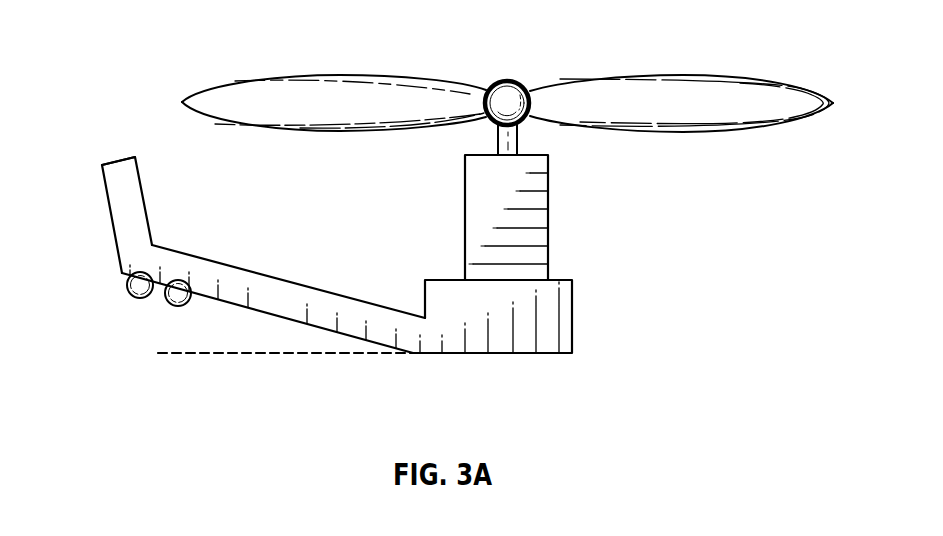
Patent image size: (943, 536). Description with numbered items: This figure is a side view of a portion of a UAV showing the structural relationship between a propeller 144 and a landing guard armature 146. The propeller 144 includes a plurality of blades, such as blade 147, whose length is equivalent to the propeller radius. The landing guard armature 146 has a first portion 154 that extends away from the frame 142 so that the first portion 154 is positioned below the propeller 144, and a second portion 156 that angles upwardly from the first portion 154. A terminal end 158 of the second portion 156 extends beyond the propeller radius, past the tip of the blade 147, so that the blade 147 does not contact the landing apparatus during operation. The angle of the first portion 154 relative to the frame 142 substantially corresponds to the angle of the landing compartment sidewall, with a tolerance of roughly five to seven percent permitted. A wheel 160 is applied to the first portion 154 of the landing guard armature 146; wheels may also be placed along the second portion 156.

The frame 142 is at (572, 317).
The propeller 144 is at (506, 80).
The landing guard armature 146 is at (336, 364).
The blade 147 is at (323, 85).
The first portion 154 is at (268, 311).
The second portion 156 is at (118, 212).
The terminal end 158 is at (118, 160).
The wheel 160 is at (131, 295).